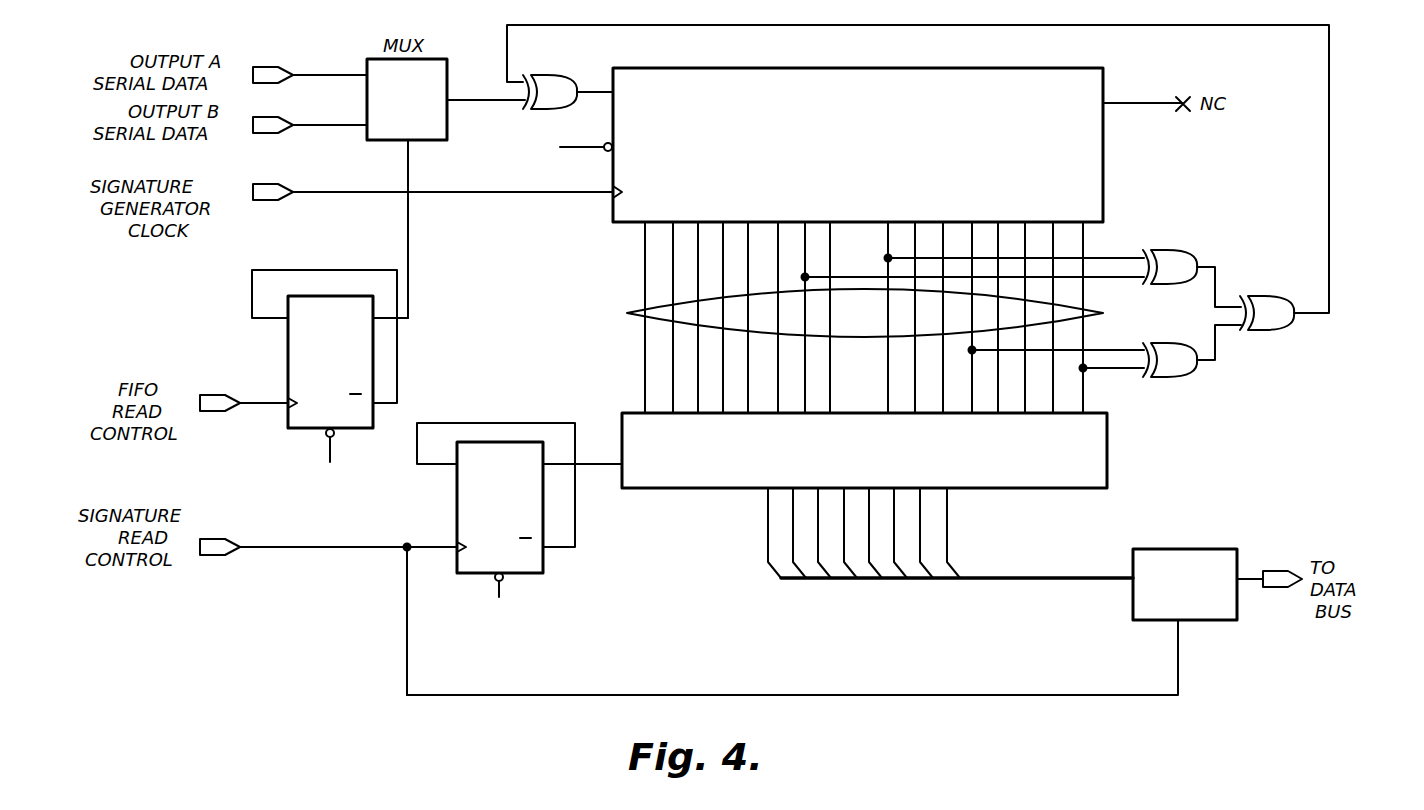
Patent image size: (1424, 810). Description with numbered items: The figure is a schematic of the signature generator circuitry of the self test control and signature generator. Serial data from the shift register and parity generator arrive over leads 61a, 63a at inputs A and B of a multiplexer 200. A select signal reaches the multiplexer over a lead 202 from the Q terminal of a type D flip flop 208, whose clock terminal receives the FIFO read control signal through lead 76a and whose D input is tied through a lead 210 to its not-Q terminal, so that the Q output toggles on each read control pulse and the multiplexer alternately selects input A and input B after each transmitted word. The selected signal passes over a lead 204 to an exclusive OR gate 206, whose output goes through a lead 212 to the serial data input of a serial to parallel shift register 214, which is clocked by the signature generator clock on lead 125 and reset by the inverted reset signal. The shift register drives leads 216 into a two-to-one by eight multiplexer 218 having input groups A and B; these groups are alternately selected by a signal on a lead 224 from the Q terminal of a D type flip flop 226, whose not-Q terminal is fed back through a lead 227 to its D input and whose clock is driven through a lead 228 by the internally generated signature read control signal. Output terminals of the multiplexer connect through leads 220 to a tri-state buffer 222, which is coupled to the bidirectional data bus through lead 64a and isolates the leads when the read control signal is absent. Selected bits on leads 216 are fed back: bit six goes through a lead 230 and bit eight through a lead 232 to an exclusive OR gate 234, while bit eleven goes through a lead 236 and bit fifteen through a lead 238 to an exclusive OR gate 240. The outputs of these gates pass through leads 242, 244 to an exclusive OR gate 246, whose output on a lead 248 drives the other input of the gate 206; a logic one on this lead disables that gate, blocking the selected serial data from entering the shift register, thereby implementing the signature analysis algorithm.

The lead 61a is at (322, 74).
The lead 63a is at (330, 124).
The lead 125 is at (348, 191).
The multiplexer 200 is at (447, 65).
The lead 204 is at (456, 102).
The exclusive OR gate 206 is at (547, 112).
The lead 212 is at (588, 90).
The serial to parallel shift register 214 is at (1105, 170).
The lead 202 is at (410, 255).
The type D flip flop 208 is at (287, 337).
The lead 210 is at (398, 375).
The lead 76a is at (259, 402).
The leads 216 is at (627, 313).
The lead 232 is at (1110, 256).
The lead 230 is at (1118, 279).
The exclusive OR gate 234 is at (1197, 257).
The lead 242 is at (1215, 290).
The lead 236 is at (1100, 346).
The lead 238 is at (1108, 371).
The exclusive OR gate 240 is at (1188, 376).
The lead 244 is at (1215, 352).
The exclusive OR gate 246 is at (1290, 326).
The lead 248 is at (1331, 242).
The 2:1x8 multiplexer 218 is at (1107, 455).
The leads 220 is at (997, 577).
The tri-state buffer 222 is at (1178, 547).
The lead 64a is at (1250, 572).
The D type flip flop 226 is at (456, 491).
The lead 224 is at (597, 469).
The lead 227 is at (576, 547).
The lead 228 is at (312, 550).